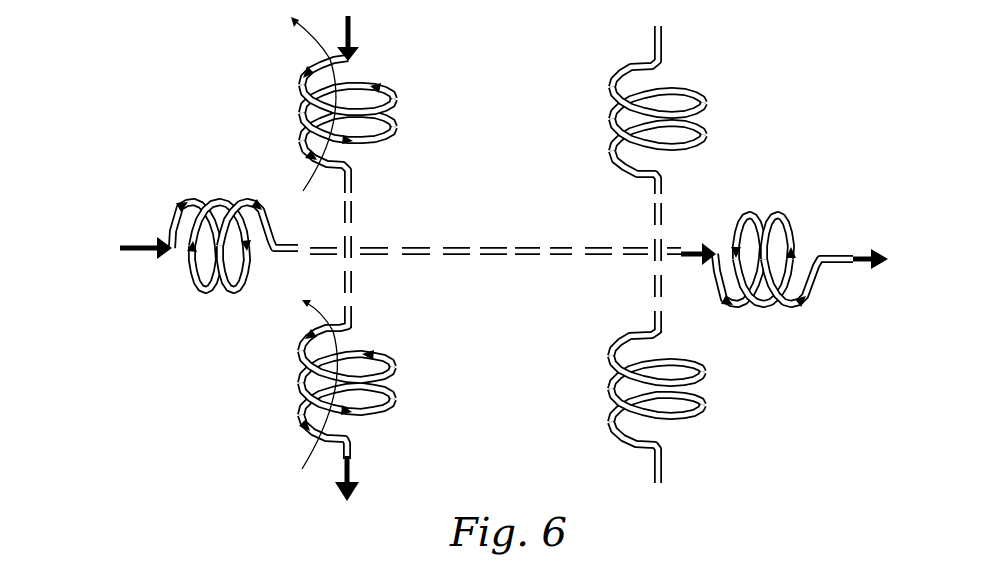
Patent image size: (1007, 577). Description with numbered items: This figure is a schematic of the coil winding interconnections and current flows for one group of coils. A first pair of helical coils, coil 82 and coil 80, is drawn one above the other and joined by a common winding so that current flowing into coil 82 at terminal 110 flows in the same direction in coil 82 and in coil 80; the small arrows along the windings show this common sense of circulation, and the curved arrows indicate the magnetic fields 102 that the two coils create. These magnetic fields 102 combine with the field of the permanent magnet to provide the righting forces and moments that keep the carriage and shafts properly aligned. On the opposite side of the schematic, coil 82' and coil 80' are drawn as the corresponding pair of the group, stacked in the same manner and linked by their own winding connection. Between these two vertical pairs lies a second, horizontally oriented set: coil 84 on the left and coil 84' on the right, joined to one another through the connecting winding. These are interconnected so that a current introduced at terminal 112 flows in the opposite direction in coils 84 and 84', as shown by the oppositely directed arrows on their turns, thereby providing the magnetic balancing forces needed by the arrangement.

The coil 80 is at (370, 405).
The coil 82 is at (375, 125).
The coil 84 is at (235, 224).
The coil 80' is at (629, 398).
The coil 82' is at (684, 110).
The coil 84' is at (784, 240).
The magnetic fields 102 is at (318, 47).
The terminal 110 is at (350, 15).
The terminal 112 is at (121, 250).